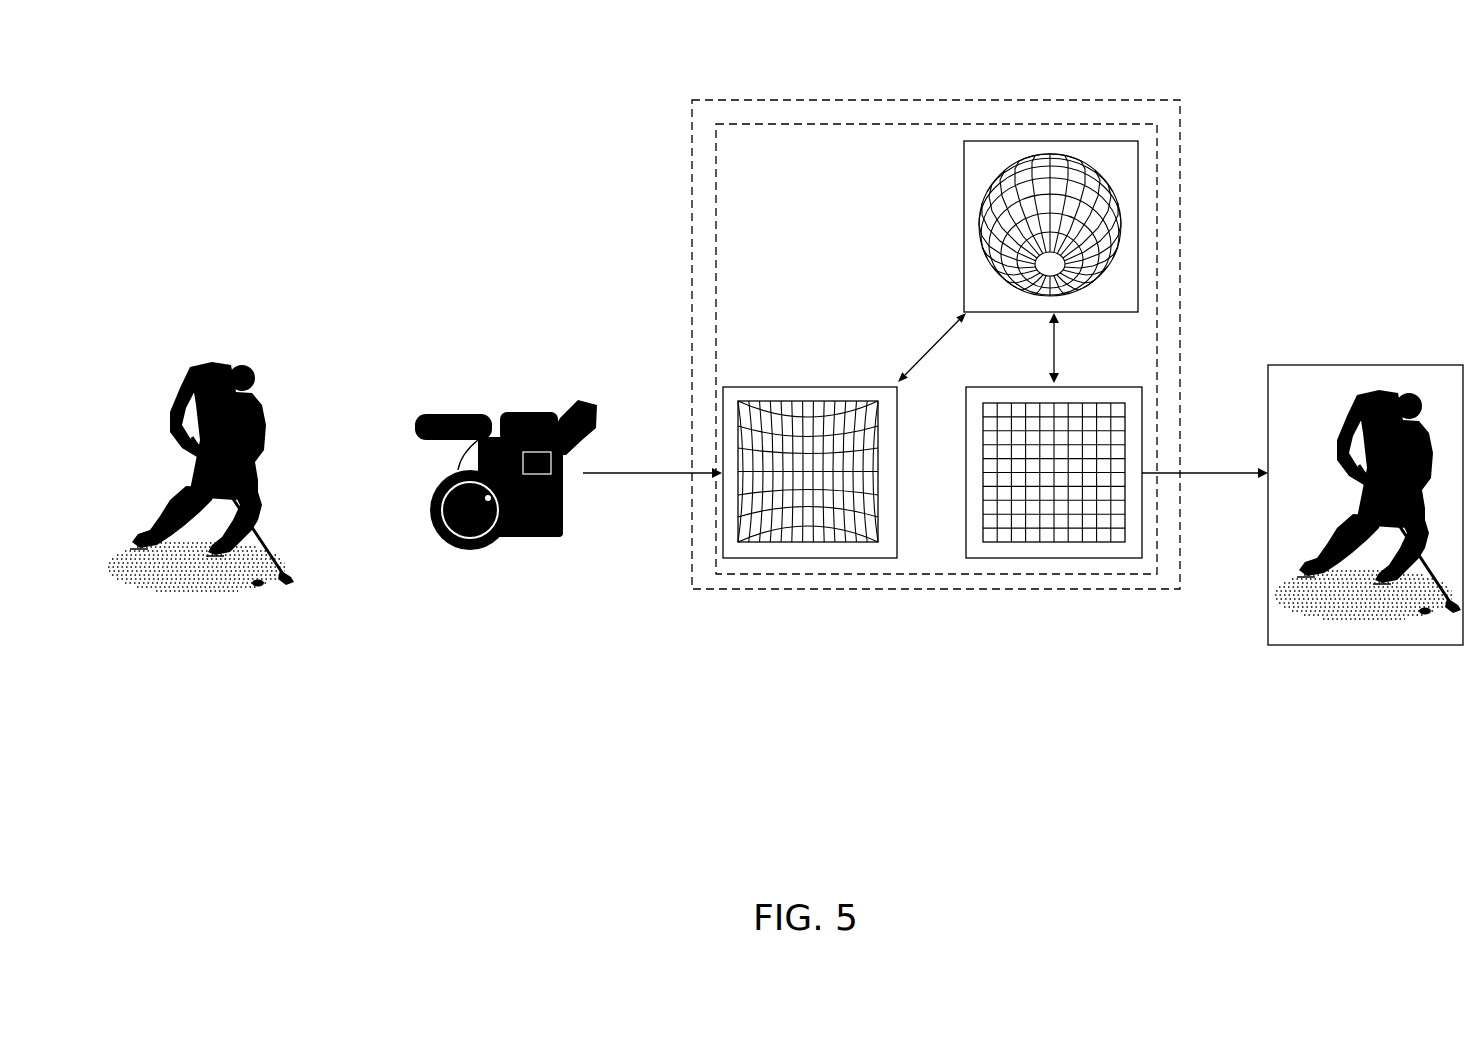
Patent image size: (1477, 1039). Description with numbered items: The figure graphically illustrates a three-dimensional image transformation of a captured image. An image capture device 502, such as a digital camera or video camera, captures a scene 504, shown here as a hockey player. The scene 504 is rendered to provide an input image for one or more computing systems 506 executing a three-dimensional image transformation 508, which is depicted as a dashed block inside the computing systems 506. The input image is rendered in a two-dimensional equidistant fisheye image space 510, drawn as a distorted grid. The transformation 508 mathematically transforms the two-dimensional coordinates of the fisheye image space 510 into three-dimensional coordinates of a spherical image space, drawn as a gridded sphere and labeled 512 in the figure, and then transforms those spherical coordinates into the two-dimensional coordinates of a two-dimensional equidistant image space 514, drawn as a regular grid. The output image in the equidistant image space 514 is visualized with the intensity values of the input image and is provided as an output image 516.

The image capture device 502 is at (509, 372).
The scene 504 is at (230, 350).
The computing systems 506 is at (950, 100).
The three-dimensional image transformation 508 is at (1049, 124).
The two-dimensional equidistant fisheye image space 510 is at (802, 558).
The spherical projection model 512 is at (1123, 141).
The two-dimensional equidistant image space 514 is at (1048, 558).
The output image 516 is at (1379, 357).